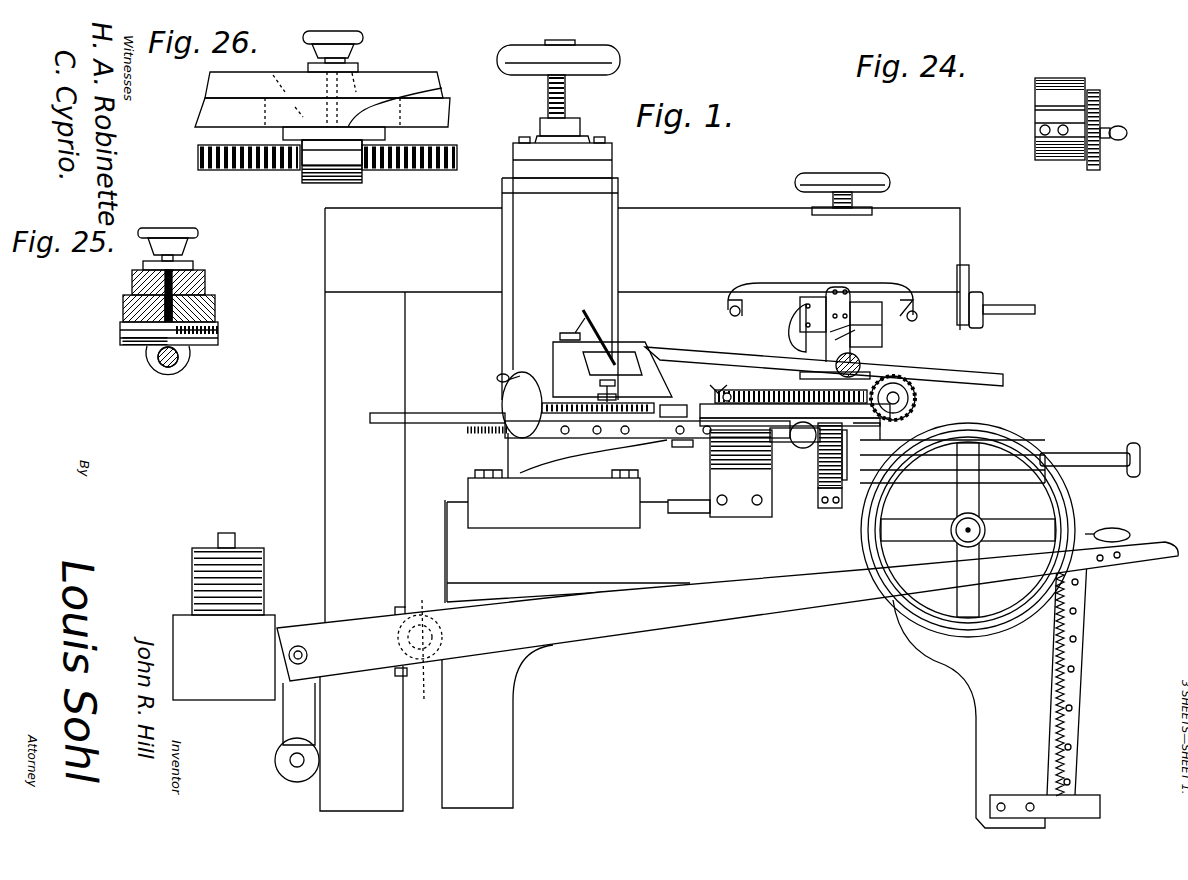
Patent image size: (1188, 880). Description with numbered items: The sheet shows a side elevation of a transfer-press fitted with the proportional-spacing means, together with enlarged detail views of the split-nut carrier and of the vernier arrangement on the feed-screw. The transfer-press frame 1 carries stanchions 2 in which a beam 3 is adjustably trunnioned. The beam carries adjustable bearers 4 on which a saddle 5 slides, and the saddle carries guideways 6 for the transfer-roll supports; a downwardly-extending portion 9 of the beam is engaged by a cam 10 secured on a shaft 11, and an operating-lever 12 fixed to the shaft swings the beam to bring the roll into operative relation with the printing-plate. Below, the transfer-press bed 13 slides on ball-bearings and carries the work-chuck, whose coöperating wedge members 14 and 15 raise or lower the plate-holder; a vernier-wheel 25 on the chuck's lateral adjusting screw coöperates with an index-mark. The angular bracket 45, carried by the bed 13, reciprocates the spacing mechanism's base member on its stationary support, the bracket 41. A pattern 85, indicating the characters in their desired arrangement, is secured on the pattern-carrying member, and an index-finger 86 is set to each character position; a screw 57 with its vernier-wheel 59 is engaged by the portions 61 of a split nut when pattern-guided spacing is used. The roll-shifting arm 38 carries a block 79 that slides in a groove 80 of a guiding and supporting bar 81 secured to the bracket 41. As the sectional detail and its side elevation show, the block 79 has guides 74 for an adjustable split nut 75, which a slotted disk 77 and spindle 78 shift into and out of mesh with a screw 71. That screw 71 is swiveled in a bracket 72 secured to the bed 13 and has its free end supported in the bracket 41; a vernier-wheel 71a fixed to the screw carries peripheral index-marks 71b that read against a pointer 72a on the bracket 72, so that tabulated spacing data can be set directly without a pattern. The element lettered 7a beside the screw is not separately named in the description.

In FIG. 1, the transfer-press frame 1 is at (771, 634).
In FIG. 1, the stanchions 2 is at (510, 313).
In FIG. 1, the beam 3 is at (698, 226).
In FIG. 1, the adjustable bearers 4 is at (870, 337).
In FIG. 1, the saddle 5 is at (878, 300).
In FIG. 1, the guideways 6 is at (826, 300).
In FIG. 1, the gear 7a is at (846, 446).
In FIG. 1, the downwardly-extending portion of the beam 9 is at (333, 389).
In FIG. 1, the cam 10 is at (421, 658).
In FIG. 1, the shaft 11 is at (420, 619).
In FIG. 1, the operating-lever 12 is at (805, 603).
In FIG. 1, the transfer-press bed 13 is at (792, 503).
In FIG. 1, the actuating-wedge 14 is at (893, 445).
In FIG. 1, the upper wedge 15 is at (930, 440).
In FIG. 1, the vernier-wheel 25 is at (917, 402).
In FIG. 26, the roll-shifting arm 38 is at (210, 78).
In FIG. 1, the roll-shifting arm 38 is at (690, 362).
In FIG. 1, the stationary bracket 41 is at (512, 453).
In FIG. 1, the angular bracket 45 is at (733, 477).
In FIG. 1, the screw 57 is at (614, 432).
In FIG. 1, the vernier-wheel 59 is at (527, 385).
In FIG. 1, the split nut 61 is at (606, 402).
In FIG. 26, the screw 71 is at (301, 166).
In FIG. 25, the screw 71 is at (172, 363).
In FIG. 1, the screw 71 is at (818, 452).
In FIG. 24, the vernier-wheel 71a is at (1100, 112).
In FIG. 24, the peripheral index-marks 71b is at (1100, 155).
In FIG. 1, the bracket 72 is at (828, 470).
In FIG. 24, the pointer 72a is at (1080, 158).
In FIG. 26, the guides 74 is at (273, 133).
In FIG. 25, the guides 74 is at (161, 344).
In FIG. 26, the adjustable split nut 75 is at (337, 153).
In FIG. 25, the adjustable split nut 75 is at (160, 370).
In FIG. 1, the adjustable split nut 75 is at (680, 447).
In FIG. 26, the slotted disk 77 is at (442, 88).
In FIG. 25, the slotted disk 77 is at (185, 348).
In FIG. 26, the spindle 78 is at (348, 92).
In FIG. 25, the spindle 78 is at (205, 275).
In FIG. 26, the block 79 is at (280, 72).
In FIG. 25, the block 79 is at (218, 305).
In FIG. 25, the groove 80 is at (125, 314).
In FIG. 26, the guiding and supporting bar 81 is at (205, 102).
In FIG. 25, the guiding and supporting bar 81 is at (123, 297).
In FIG. 1, the pattern 85 is at (630, 352).
In FIG. 1, the index-finger 86 is at (580, 340).